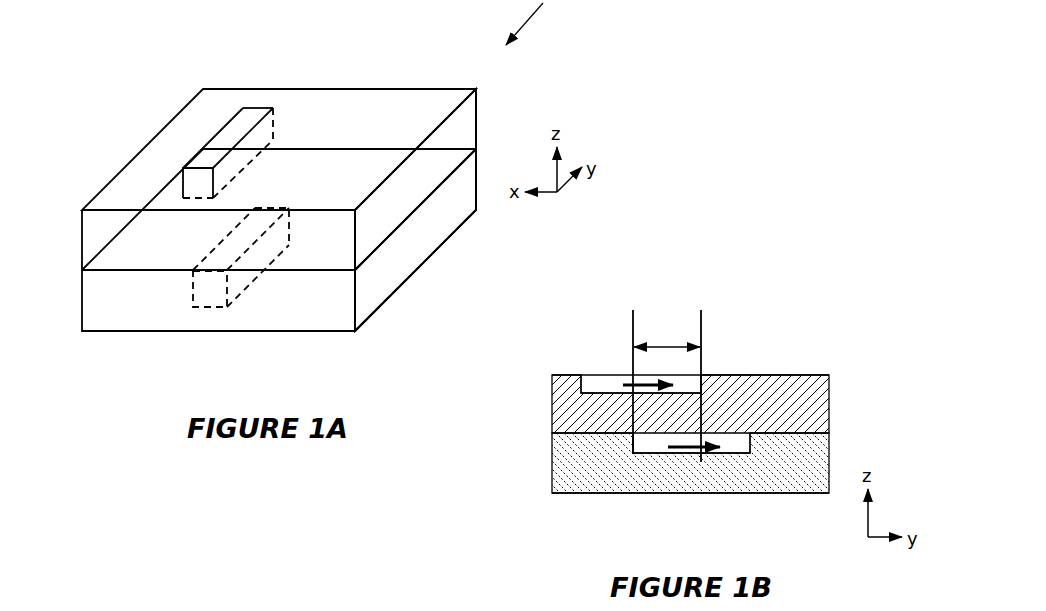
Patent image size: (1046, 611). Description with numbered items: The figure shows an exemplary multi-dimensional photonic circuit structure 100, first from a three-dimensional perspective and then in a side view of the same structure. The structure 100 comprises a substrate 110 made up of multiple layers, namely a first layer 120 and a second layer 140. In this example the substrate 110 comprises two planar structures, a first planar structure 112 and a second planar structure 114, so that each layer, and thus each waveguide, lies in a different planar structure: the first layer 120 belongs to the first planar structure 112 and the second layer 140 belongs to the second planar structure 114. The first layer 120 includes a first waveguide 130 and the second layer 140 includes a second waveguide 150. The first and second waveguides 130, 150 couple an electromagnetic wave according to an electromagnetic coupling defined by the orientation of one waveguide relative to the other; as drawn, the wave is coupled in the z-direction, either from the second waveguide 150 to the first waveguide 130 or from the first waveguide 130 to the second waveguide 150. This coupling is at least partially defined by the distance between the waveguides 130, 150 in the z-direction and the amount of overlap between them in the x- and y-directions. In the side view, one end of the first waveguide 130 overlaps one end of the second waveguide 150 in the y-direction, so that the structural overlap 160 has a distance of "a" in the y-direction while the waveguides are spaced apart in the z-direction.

In FIG. 1B, the multi-dimensional photonic circuit structure 100 is at (675, 390).
In FIG. 1A, the substrate 110 is at (70, 212).
In FIG. 1B, the substrate 110 is at (675, 422).
In FIG. 1A, the first planar structure 112 is at (460, 127).
In FIG. 1B, the first planar structure 112 is at (812, 407).
In FIG. 1A, the second planar structure 114 is at (457, 203).
In FIG. 1B, the second planar structure 114 is at (812, 477).
In FIG. 1A, the first layer 120 is at (317, 78).
In FIG. 1B, the first layer 120 is at (757, 357).
In FIG. 1A, the first waveguide 130 is at (226, 141).
In FIG. 1B, the first waveguide 130 is at (588, 382).
In FIG. 1A, the second layer 140 is at (415, 303).
In FIG. 1B, the second layer 140 is at (780, 513).
In FIG. 1A, the second waveguide 150 is at (198, 297).
In FIG. 1B, the second waveguide 150 is at (648, 447).
In FIG. 1B, the structural overlap 160 is at (701, 300).